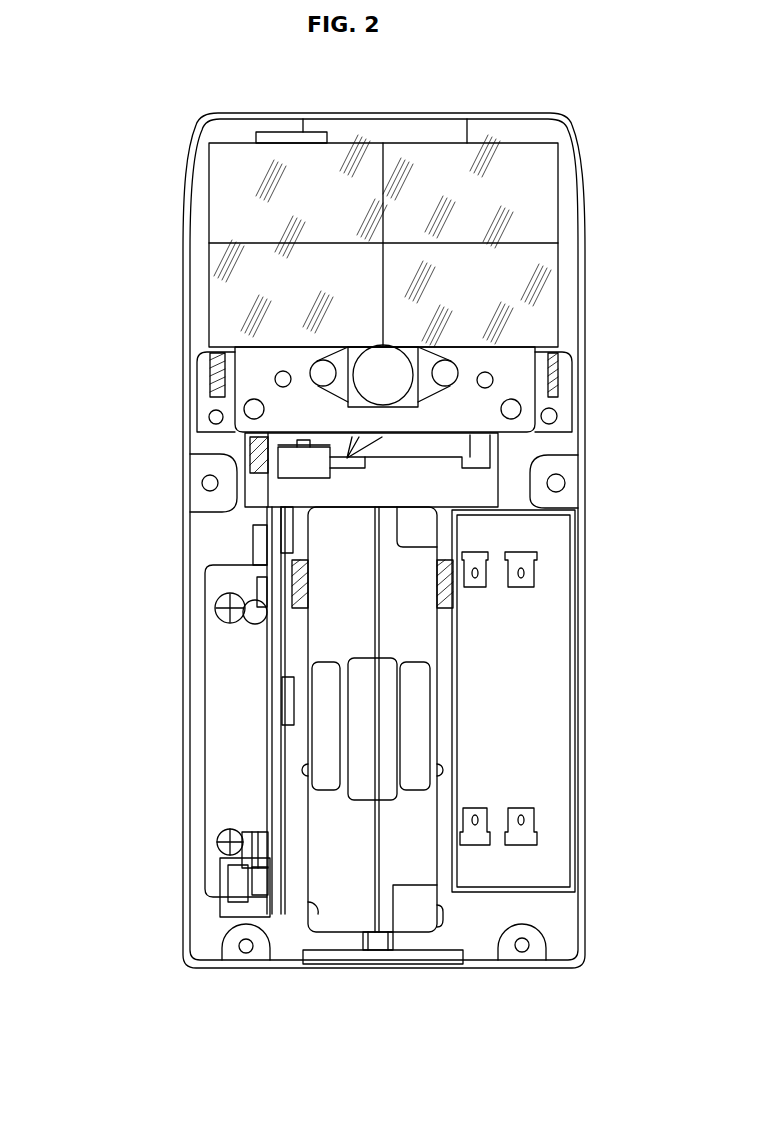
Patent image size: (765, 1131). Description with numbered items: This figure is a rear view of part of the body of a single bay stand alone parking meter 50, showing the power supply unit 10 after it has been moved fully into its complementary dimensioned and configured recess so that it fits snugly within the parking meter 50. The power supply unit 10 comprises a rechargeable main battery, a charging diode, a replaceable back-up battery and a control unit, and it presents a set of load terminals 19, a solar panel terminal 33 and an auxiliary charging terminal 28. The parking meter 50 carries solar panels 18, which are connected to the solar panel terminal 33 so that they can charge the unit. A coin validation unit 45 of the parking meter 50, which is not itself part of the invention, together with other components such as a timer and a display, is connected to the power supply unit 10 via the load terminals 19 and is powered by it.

The power supply unit 10 is at (545, 915).
The solar panels 18 is at (518, 200).
The load terminals 19 is at (482, 560).
The auxiliary charging terminal 28 is at (538, 828).
The solar panel terminal 33 is at (538, 575).
The coin validation unit 45 is at (342, 920).
The parking meter 50 is at (132, 362).